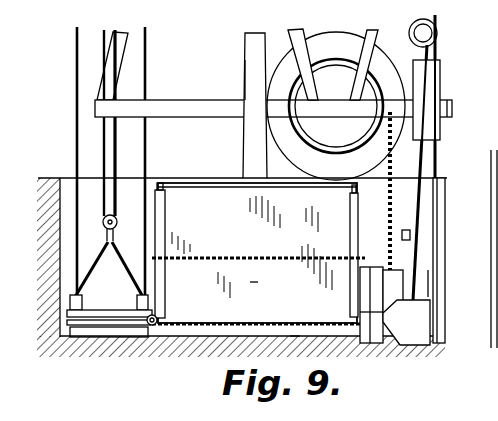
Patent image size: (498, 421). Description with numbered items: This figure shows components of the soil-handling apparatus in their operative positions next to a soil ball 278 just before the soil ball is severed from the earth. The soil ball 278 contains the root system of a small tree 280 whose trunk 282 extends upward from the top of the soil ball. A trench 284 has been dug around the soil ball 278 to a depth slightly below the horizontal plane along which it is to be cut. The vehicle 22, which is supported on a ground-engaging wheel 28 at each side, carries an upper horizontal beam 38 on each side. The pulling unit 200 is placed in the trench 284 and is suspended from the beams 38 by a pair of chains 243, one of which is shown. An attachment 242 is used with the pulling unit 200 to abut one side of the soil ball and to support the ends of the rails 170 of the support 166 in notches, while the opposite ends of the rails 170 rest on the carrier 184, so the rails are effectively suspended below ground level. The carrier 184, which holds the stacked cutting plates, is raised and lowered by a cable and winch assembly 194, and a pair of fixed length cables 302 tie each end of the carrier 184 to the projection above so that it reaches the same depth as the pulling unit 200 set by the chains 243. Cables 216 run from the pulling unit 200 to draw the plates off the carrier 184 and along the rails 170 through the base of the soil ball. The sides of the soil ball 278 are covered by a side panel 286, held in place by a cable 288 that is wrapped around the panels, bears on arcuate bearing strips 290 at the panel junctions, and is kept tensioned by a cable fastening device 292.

The fixed length cables 302 is at (75, 66).
The small tree 280 is at (255, 30).
The ground-engaging wheel 28 is at (330, 46).
The pulling unit 200 is at (406, 38).
The vehicle 22 is at (158, 96).
The trunk 282 is at (245, 70).
The beam 38 is at (452, 106).
The cable and winch assembly 194 is at (122, 146).
The trench 284 is at (58, 178).
The soil ball 278 is at (206, 182).
The arcuate bearing strips 290 is at (165, 228).
The cable fastening device 292 is at (358, 252).
The cable 288 is at (244, 252).
The side panel 286 is at (294, 283).
The cables 216 is at (272, 321).
The chains 243 is at (411, 234).
The rails 170 is at (300, 338).
The support 166 is at (200, 346).
The attachment 242 is at (384, 350).
The carrier 184 is at (84, 304).